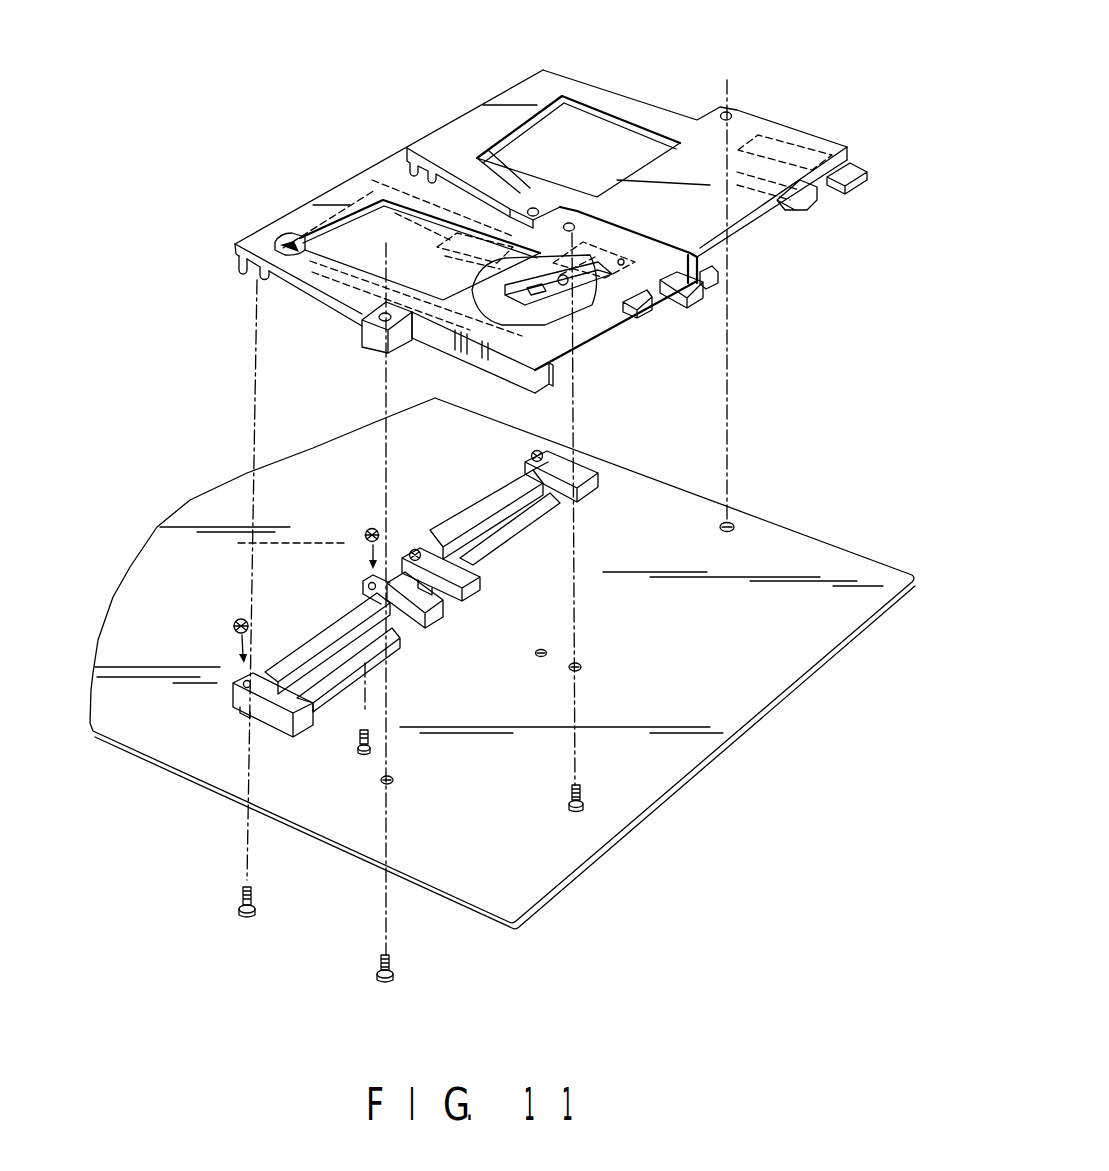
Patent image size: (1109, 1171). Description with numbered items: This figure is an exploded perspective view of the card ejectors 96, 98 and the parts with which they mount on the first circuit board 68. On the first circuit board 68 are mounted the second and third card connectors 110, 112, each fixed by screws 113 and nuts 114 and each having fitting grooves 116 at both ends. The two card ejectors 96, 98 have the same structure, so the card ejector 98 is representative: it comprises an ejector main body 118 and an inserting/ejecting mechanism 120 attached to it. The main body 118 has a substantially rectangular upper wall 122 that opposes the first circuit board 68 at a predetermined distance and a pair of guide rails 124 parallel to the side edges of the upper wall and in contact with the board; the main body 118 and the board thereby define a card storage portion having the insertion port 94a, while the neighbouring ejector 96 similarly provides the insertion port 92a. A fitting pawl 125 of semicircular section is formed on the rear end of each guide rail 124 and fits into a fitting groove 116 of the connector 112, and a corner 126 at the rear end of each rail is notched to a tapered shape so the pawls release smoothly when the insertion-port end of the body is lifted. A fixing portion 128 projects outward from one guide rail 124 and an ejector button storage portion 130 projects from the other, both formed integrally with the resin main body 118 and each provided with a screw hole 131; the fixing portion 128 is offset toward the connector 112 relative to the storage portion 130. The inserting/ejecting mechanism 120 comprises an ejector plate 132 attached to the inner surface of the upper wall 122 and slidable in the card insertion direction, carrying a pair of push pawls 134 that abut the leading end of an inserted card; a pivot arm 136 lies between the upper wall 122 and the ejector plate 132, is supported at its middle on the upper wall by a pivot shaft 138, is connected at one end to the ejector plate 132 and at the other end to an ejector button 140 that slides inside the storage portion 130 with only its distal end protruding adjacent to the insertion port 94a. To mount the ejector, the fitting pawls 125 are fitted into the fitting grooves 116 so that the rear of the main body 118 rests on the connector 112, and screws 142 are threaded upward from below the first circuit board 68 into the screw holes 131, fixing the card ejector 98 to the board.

The first circuit board 68 is at (818, 550).
The insertion port of second card storage portion 92a is at (778, 217).
The insertion port 94a is at (613, 323).
The card ejector 96 is at (491, 84).
The card ejector 98 is at (293, 184).
The second card connector 110 is at (487, 513).
The third card connector 112 is at (338, 603).
The screw 113 is at (253, 911).
The nut 114 is at (234, 623).
The fitting groove 116 is at (250, 712).
The ejector main body 118 is at (677, 122).
The inserting/ejecting mechanism 120 is at (560, 325).
The upper wall 122 is at (297, 217).
The guide rail 124 is at (339, 300).
The fitting pawl 125 is at (257, 277).
The corner 126 is at (236, 266).
The fixing portion 128 is at (520, 203).
The ejector button storage portion 130 is at (613, 213).
The screw hole 131 is at (732, 113).
The ejector plate 132 is at (636, 140).
The push pawl 134 is at (383, 167).
The pivot arm 136 is at (547, 277).
The pivot shaft 138 is at (596, 330).
The ejector button 140 is at (858, 170).
The screw 142 is at (394, 974).